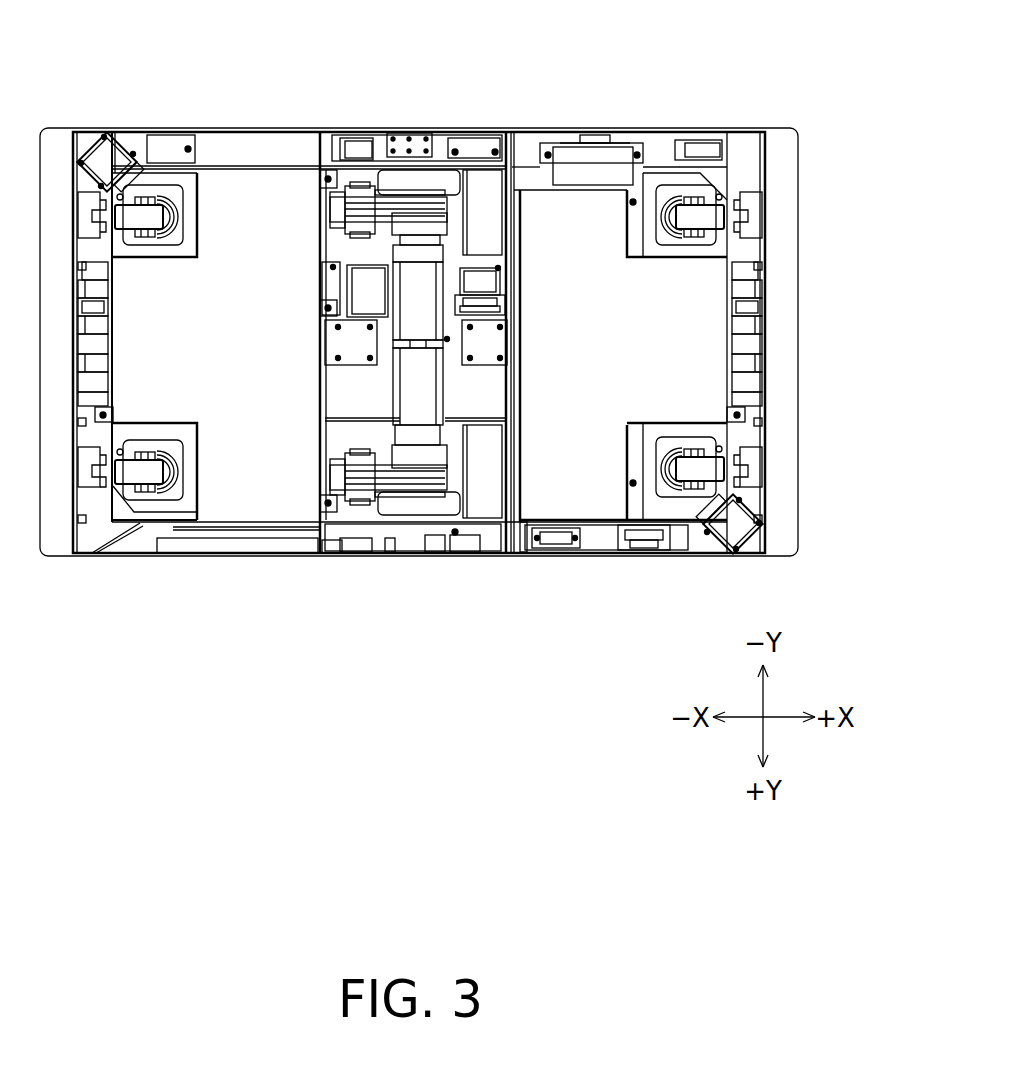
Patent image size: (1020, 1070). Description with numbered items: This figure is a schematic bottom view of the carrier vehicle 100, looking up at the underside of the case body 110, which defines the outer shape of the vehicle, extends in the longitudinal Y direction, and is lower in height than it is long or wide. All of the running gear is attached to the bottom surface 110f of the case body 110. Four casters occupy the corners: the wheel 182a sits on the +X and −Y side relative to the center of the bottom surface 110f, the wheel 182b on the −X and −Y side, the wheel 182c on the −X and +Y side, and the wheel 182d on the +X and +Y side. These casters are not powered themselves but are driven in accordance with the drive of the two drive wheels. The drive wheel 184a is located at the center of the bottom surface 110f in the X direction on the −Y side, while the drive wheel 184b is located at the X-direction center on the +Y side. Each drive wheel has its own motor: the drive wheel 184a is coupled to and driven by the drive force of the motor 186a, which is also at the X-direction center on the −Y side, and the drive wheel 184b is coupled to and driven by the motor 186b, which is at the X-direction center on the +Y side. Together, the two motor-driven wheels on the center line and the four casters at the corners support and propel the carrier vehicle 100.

The carrier vehicle 100 is at (773, 88).
The case body 110 is at (806, 292).
The bottom surface 110f is at (722, 181).
The wheel 182a is at (683, 213).
The wheel 182b is at (148, 210).
The wheel 182c is at (153, 470).
The wheel 182d is at (708, 473).
The drive wheel 184a is at (433, 180).
The drive wheel 184b is at (408, 505).
The motor 186a is at (420, 270).
The motor 186b is at (422, 390).